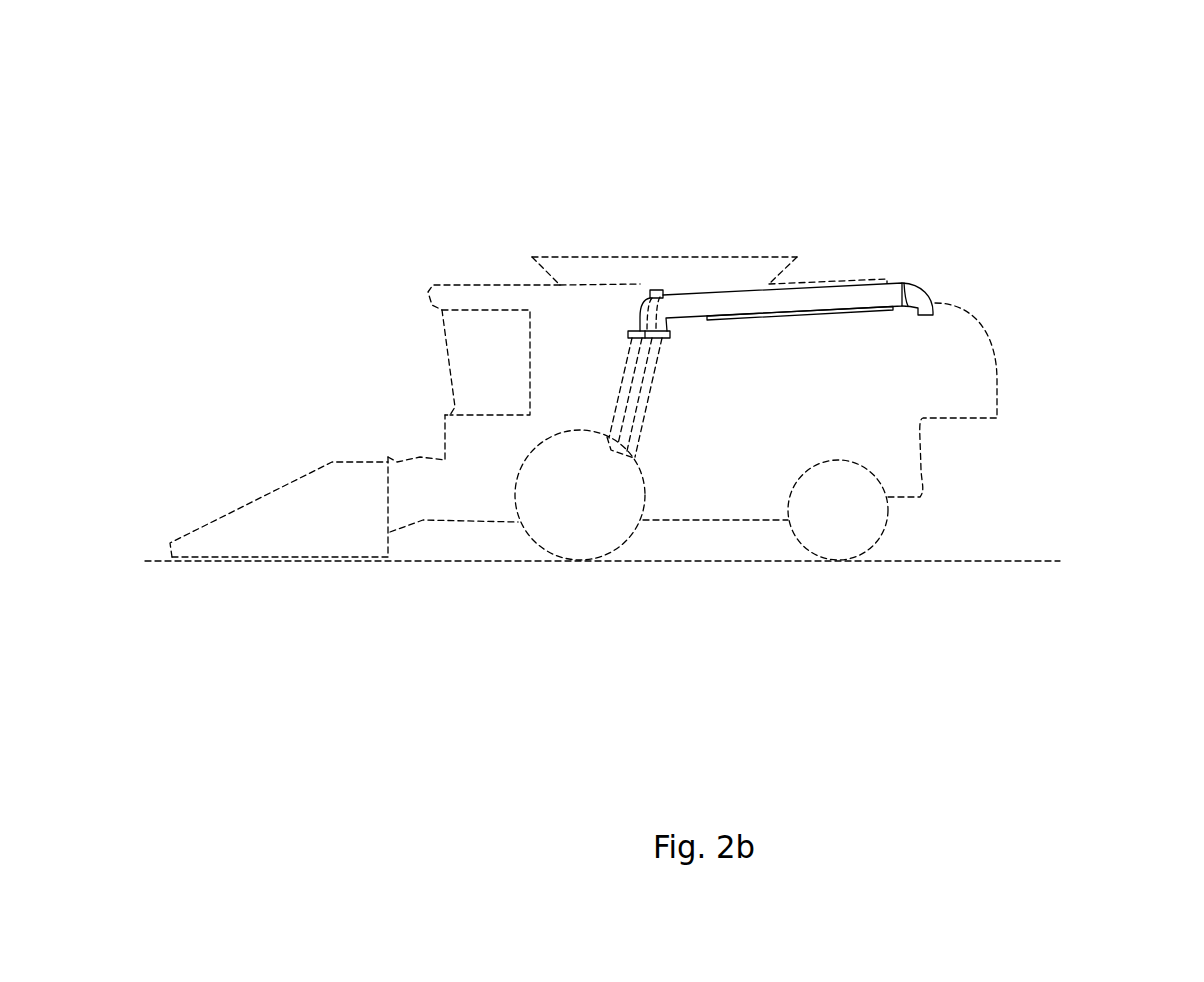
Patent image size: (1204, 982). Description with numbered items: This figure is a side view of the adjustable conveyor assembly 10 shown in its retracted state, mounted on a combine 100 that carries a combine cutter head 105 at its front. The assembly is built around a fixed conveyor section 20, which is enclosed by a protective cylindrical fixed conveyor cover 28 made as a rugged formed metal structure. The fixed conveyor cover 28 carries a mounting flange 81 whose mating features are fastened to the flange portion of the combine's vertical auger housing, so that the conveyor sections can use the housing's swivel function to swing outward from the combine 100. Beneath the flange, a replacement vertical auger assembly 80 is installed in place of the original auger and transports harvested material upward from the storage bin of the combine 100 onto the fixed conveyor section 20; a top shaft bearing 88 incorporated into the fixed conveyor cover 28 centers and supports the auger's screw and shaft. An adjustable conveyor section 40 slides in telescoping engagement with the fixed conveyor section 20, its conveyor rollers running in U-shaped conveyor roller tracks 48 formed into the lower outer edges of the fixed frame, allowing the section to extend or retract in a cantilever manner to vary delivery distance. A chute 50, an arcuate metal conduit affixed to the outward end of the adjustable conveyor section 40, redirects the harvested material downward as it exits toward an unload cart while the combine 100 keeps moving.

The adjustable conveyor assembly 10 is at (208, 128).
The fixed conveyor section 20 is at (771, 271).
The fixed conveyor cover 28 is at (852, 295).
The adjustable conveyor section 40 is at (800, 348).
The conveyor roller track 48 is at (817, 312).
The chute 50 is at (917, 289).
The replacement vertical auger assembly 80 is at (619, 401).
The mounting flange 81 is at (633, 331).
The top shaft bearing 88 is at (656, 290).
The combine 100 is at (450, 357).
The combine cutter head 105 is at (277, 490).